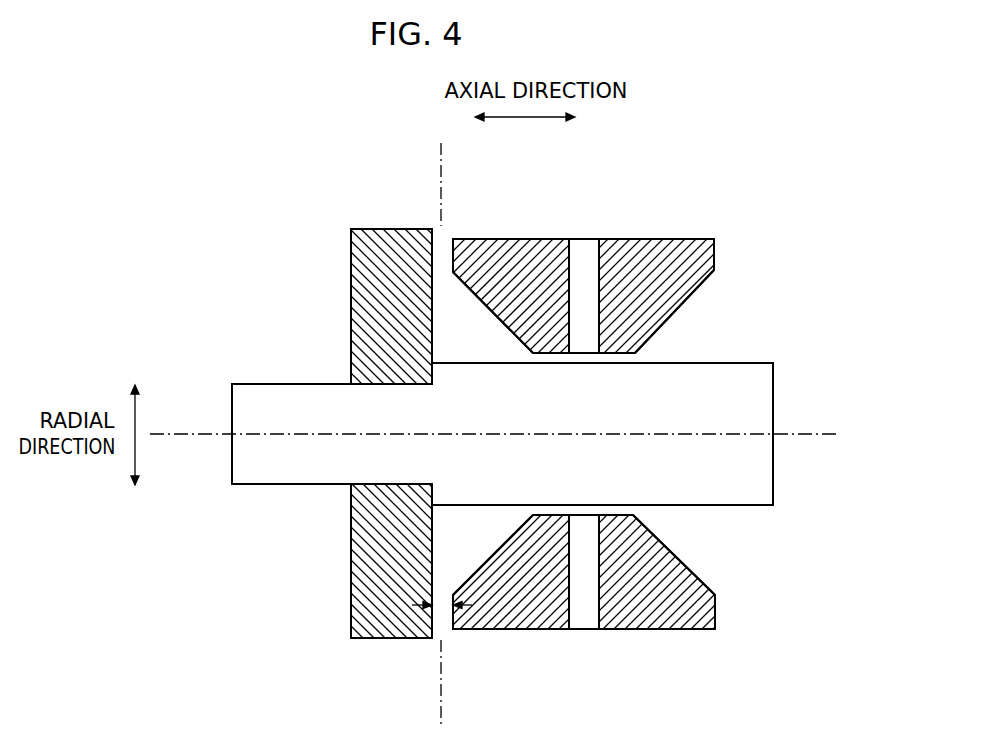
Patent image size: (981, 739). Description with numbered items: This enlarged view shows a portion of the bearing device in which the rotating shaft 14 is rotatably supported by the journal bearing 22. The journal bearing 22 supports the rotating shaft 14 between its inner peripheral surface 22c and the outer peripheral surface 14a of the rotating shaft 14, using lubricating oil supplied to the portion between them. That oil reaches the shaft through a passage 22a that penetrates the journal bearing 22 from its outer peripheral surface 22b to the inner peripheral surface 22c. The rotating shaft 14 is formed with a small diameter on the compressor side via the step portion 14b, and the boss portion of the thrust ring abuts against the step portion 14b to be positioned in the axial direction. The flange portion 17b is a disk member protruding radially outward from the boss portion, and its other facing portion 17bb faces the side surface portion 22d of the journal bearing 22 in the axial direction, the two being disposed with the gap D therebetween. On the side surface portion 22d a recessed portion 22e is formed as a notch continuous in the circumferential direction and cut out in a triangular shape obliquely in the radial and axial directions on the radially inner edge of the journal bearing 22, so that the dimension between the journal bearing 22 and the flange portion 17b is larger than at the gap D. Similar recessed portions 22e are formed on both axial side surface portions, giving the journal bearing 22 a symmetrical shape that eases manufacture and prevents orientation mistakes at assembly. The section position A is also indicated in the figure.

The rotating shaft 14 is at (773, 383).
The outer peripheral surface of the rotating shaft 14a is at (757, 363).
The step portion 14b is at (432, 458).
The flange portion 17b is at (376, 229).
The other facing portion 17bb is at (432, 303).
The journal bearing 22 is at (677, 239).
The passage 22a is at (587, 239).
The outer peripheral surface 22b is at (536, 239).
The inner peripheral surface 22c is at (617, 356).
The side surface portion 22d is at (450, 257).
The recessed portion 22e is at (687, 299).
The gap D is at (446, 598).
The section line A- A is at (434, 158).